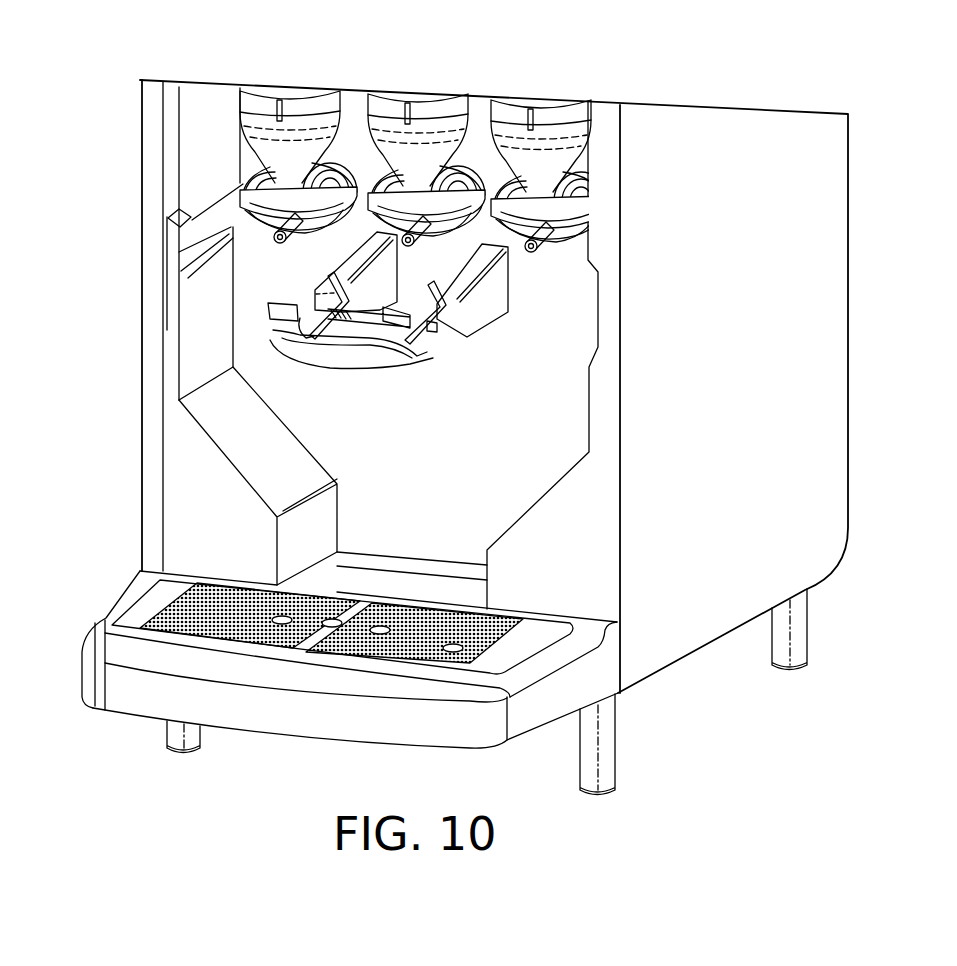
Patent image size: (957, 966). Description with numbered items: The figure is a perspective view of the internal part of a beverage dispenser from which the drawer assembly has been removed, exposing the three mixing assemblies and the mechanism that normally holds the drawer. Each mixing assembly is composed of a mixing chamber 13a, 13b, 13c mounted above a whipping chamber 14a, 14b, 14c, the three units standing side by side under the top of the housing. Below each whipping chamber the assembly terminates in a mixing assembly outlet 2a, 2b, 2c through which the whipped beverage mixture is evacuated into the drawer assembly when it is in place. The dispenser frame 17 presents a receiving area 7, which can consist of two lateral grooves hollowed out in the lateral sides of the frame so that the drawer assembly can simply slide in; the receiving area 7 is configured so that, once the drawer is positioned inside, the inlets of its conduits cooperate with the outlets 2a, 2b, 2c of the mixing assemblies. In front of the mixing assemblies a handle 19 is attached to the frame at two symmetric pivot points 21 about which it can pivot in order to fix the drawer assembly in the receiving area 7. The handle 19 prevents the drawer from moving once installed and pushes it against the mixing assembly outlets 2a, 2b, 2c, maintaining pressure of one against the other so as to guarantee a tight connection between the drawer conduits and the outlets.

The mixing chamber 13a is at (315, 120).
The mixing chamber 13b is at (431, 123).
The mixing chamber 13c is at (560, 130).
The whipping chamber 14a is at (250, 181).
The whipping chamber 14b is at (470, 160).
The whipping chamber 14c is at (588, 193).
The mixing assembly outlet 2a is at (182, 248).
The mixing assembly outlet 2b is at (414, 244).
The mixing assembly outlet 2c is at (520, 248).
The receiving area 7 is at (180, 258).
The frame 17 is at (193, 368).
The handle 19 is at (326, 362).
The pivot points 21 is at (330, 320).